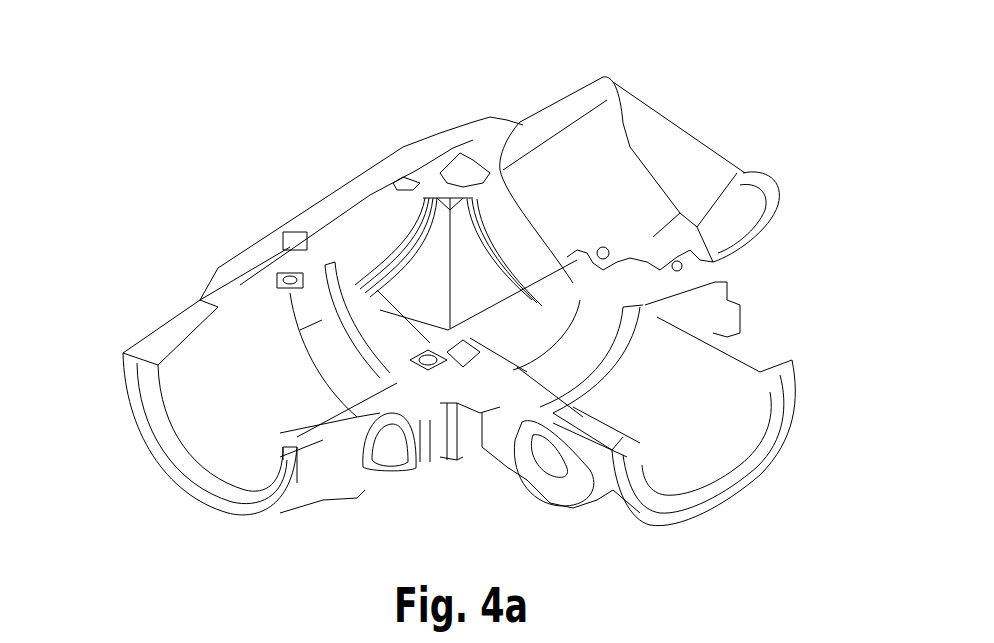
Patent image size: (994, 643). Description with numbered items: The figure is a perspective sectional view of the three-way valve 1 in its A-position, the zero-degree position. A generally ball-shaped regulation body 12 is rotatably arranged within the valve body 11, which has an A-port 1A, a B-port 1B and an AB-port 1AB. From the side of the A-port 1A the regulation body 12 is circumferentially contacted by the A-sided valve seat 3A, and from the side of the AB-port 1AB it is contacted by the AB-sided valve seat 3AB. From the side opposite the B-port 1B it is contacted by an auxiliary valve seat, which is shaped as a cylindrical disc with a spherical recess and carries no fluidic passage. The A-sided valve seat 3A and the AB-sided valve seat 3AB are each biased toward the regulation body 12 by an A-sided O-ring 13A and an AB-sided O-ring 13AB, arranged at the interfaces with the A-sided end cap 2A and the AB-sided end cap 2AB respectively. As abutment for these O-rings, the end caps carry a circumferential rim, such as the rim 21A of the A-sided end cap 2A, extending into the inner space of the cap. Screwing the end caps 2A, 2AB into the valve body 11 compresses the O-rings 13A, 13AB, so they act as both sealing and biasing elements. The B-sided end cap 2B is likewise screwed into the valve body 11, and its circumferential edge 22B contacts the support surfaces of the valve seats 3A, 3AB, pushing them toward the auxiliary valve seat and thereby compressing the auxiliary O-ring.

The three-way valve 1 is at (218, 168).
The A-port 1A is at (258, 415).
The B-port 1B is at (667, 408).
The AB-port 1AB is at (630, 198).
The A-sided end cap 2A is at (342, 473).
The B-sided end cap 2B is at (725, 333).
The AB-sided end cap 2AB is at (738, 225).
The A-sided valve seat 3A is at (333, 335).
The AB-sided valve seat 3AB is at (492, 218).
The valve body 11 is at (395, 166).
The regulation body 12 is at (510, 310).
The A-sided O-ring 13A is at (290, 282).
The AB-sided O-ring 13AB is at (475, 175).
The rim 21A is at (305, 365).
The circumferential edge 22B is at (587, 273).